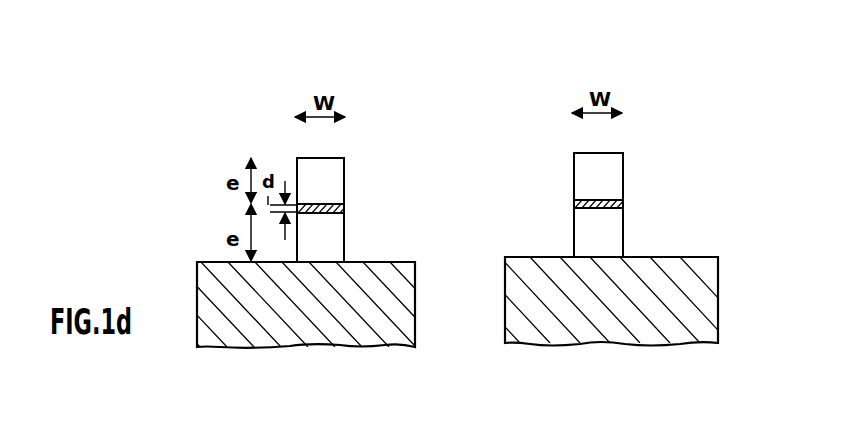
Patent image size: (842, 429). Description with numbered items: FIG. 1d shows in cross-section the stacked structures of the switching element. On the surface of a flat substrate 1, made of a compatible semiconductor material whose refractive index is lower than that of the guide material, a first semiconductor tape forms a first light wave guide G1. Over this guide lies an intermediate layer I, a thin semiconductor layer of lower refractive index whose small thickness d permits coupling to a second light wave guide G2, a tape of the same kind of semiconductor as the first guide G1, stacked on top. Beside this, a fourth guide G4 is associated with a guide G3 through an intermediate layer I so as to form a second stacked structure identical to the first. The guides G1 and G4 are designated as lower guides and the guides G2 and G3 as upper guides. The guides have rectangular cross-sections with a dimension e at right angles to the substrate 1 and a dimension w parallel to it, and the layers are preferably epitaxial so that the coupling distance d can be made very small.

The substrate 1 is at (535, 285).
The first light wave guide G1 is at (330, 238).
The second light wave guide G2 is at (335, 178).
The third light wave guide G3 is at (610, 171).
The fourth light wave guide G4 is at (603, 234).
The intermediate layer I is at (346, 208).